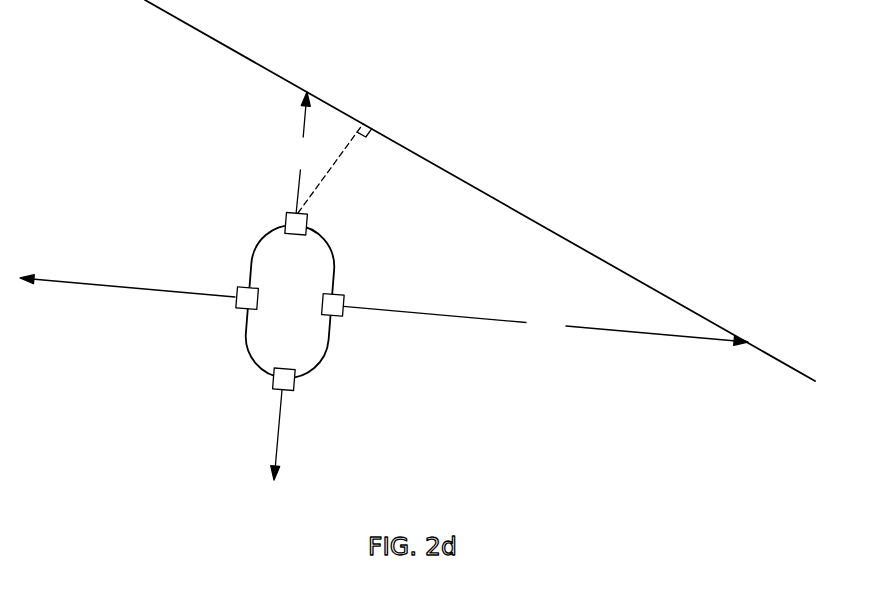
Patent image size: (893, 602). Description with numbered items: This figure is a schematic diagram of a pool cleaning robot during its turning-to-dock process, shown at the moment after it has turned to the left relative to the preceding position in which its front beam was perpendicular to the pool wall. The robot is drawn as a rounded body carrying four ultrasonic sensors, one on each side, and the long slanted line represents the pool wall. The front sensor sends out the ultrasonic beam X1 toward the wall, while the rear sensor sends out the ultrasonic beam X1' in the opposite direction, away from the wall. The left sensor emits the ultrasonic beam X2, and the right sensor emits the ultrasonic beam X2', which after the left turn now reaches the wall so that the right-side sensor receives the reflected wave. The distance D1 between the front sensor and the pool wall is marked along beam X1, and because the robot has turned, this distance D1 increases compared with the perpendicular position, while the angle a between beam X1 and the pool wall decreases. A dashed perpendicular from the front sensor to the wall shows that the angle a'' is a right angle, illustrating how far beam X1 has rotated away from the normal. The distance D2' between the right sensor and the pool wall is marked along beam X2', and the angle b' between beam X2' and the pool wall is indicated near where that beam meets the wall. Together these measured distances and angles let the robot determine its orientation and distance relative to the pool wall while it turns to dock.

The ultrasonic beam X1 is at (286, 152).
The ultrasonic beam X1' is at (262, 435).
The ultrasonic beam X2 is at (127, 302).
The ultrasonic beam X2' is at (546, 328).
The distance D1 is at (301, 154).
The distance D2' is at (546, 325).
The angle a is at (316, 108).
The angle a'' is at (342, 168).
The angle b' is at (705, 325).